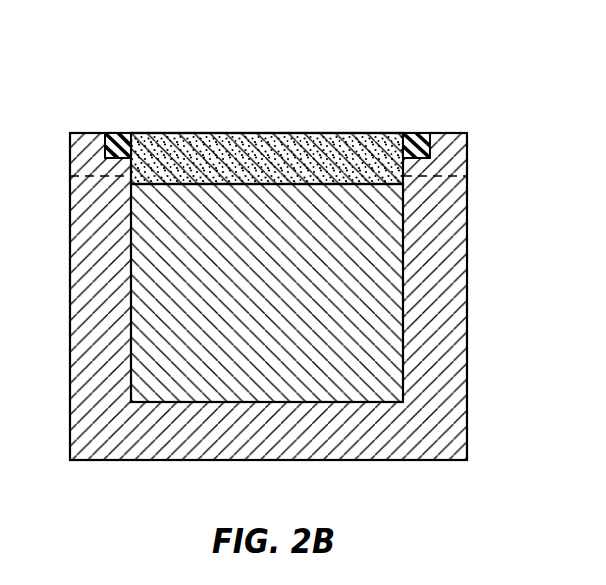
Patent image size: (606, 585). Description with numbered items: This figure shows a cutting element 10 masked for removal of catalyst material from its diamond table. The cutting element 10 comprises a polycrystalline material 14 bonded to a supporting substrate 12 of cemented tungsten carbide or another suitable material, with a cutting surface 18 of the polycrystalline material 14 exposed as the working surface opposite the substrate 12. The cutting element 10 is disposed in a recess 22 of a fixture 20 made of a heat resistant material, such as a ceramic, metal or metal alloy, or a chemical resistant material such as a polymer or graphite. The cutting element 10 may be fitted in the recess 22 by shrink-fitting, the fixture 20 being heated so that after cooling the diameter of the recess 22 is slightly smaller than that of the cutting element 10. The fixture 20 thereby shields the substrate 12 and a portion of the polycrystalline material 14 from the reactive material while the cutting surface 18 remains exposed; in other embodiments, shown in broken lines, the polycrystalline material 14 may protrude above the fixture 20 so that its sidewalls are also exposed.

The cutting element 10 is at (404, 273).
The supporting substrate 12 is at (380, 238).
The polycrystalline material 14 is at (360, 133).
The cutting surface 18 is at (175, 133).
The fixture 20 is at (87, 133).
The recess 22 is at (304, 235).